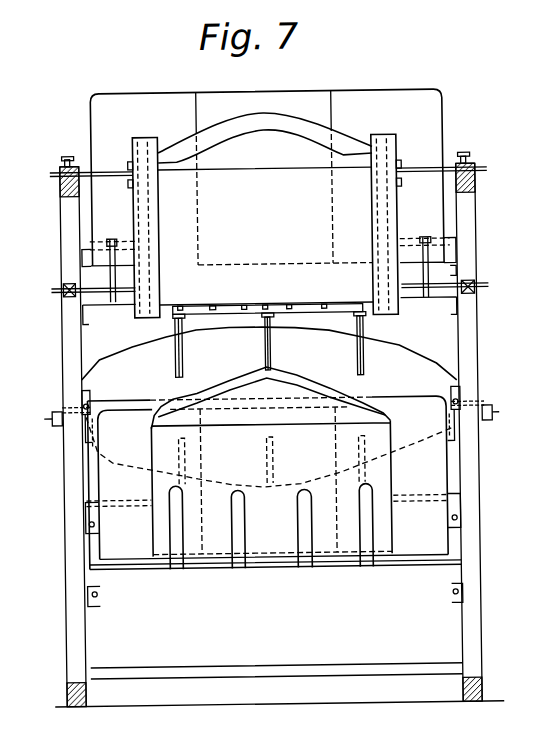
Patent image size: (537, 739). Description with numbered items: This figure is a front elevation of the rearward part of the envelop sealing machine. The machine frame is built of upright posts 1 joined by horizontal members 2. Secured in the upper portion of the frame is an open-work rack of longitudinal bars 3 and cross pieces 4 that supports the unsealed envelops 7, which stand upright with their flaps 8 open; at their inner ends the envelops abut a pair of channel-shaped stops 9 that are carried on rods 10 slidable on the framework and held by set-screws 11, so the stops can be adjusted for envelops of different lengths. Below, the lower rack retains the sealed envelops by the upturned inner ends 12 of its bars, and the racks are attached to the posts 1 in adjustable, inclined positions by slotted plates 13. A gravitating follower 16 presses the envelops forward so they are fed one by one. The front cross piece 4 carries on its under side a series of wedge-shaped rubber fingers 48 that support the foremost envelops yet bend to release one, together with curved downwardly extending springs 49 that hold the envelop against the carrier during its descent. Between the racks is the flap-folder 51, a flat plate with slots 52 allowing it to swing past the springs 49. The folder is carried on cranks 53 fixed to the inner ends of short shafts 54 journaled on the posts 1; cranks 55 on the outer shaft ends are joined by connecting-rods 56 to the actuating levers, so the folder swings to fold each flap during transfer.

The posts 1 is at (64, 647).
The horizontal members 2 is at (61, 182).
The longitudinal bars 3 is at (442, 277).
The cross pieces 4 is at (89, 240).
The unsealed envelops 7 is at (143, 533).
The flaps 8 is at (267, 135).
The stops 9 is at (147, 135).
The rods 10 is at (53, 170).
The set-screws 11 is at (68, 152).
The inner ends of bars 12 is at (228, 546).
The plates 13 is at (94, 596).
The follower 16 is at (176, 91).
The resilient fingers 48 is at (326, 309).
The curved springs 49 is at (166, 320).
The flap-folder 51 is at (80, 364).
The slots 52 is at (173, 371).
The cranks 53 is at (84, 394).
The short shafts 54 is at (470, 400).
The cranks 55 is at (62, 427).
The connecting-rods 56 is at (52, 417).